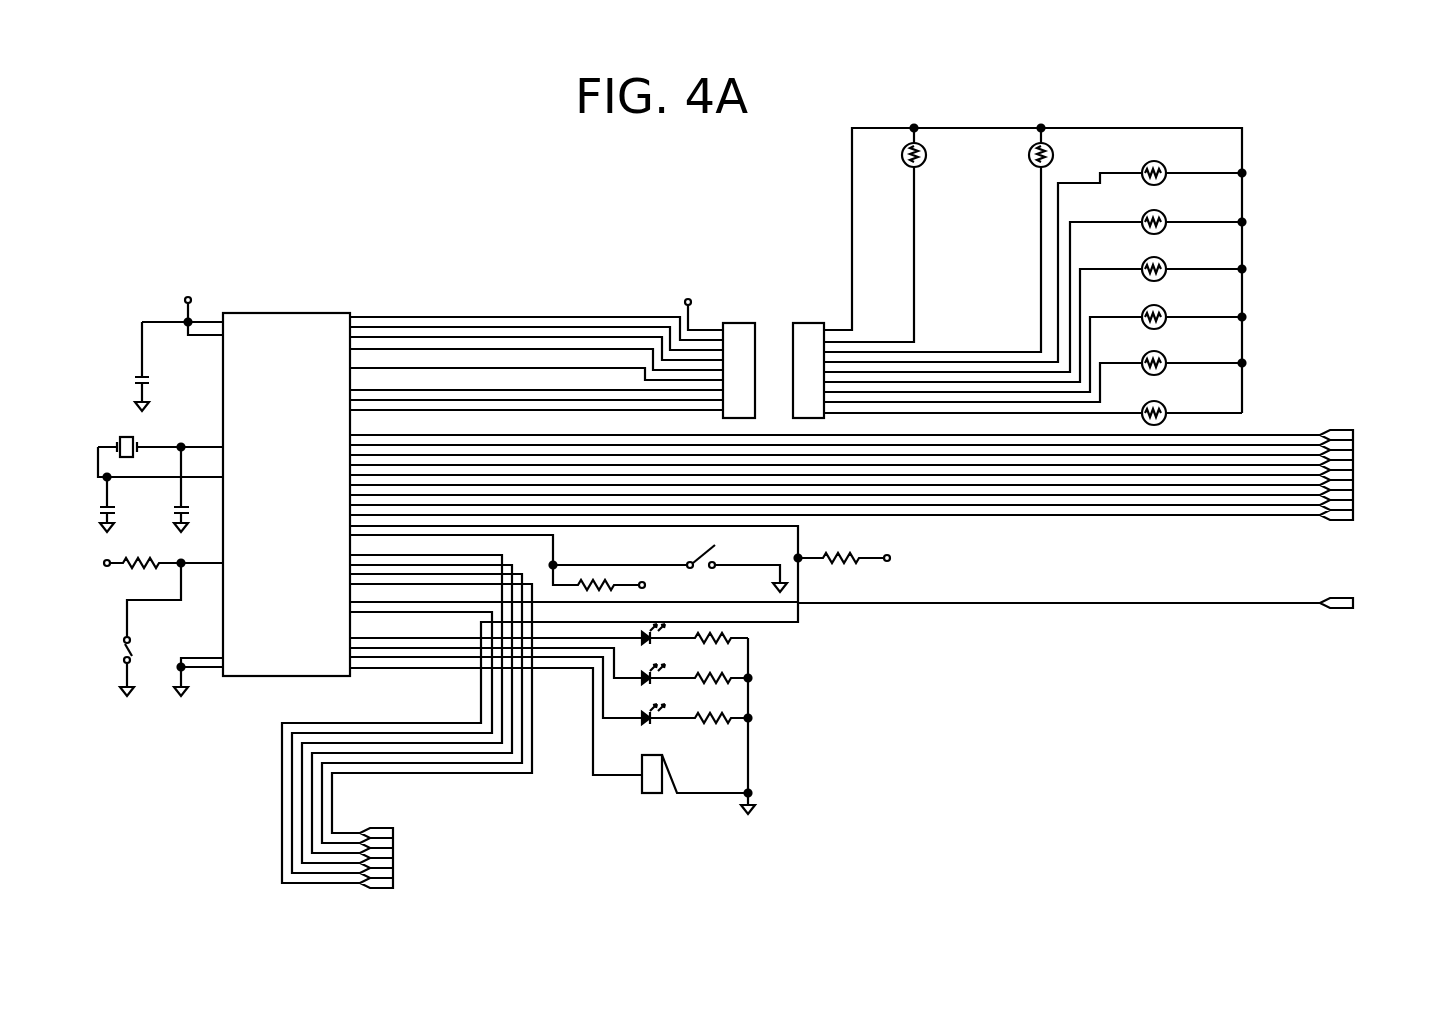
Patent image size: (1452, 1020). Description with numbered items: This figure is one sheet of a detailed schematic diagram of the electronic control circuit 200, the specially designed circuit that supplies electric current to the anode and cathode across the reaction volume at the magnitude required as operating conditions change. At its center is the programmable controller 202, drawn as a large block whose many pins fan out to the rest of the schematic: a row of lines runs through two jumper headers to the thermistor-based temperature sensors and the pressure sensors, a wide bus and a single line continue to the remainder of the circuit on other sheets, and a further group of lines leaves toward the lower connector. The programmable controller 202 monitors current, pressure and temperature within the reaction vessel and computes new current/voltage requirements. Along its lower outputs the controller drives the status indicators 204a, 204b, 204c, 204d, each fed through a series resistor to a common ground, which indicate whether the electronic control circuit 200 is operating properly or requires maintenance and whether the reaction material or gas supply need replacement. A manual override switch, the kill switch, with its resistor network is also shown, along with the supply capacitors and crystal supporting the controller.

The electronic control circuit 200 is at (515, 268).
The programmable controller 202 is at (295, 620).
The status indicator 204a is at (620, 679).
The status indicator 204b is at (549, 666).
The status indicator 204c is at (549, 690).
The status indicator 204d is at (549, 730).